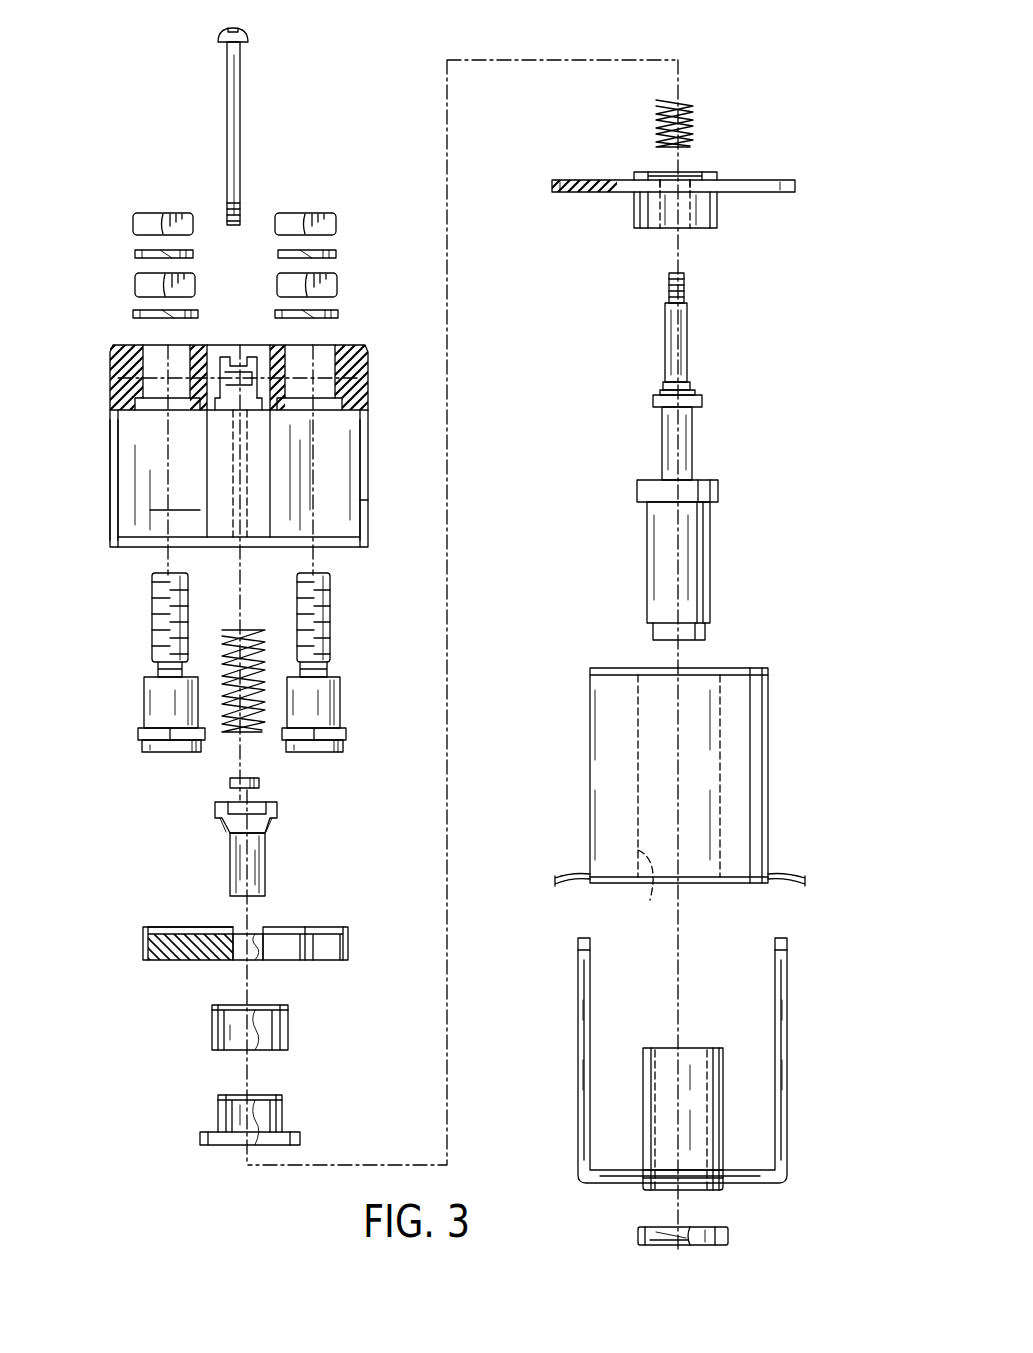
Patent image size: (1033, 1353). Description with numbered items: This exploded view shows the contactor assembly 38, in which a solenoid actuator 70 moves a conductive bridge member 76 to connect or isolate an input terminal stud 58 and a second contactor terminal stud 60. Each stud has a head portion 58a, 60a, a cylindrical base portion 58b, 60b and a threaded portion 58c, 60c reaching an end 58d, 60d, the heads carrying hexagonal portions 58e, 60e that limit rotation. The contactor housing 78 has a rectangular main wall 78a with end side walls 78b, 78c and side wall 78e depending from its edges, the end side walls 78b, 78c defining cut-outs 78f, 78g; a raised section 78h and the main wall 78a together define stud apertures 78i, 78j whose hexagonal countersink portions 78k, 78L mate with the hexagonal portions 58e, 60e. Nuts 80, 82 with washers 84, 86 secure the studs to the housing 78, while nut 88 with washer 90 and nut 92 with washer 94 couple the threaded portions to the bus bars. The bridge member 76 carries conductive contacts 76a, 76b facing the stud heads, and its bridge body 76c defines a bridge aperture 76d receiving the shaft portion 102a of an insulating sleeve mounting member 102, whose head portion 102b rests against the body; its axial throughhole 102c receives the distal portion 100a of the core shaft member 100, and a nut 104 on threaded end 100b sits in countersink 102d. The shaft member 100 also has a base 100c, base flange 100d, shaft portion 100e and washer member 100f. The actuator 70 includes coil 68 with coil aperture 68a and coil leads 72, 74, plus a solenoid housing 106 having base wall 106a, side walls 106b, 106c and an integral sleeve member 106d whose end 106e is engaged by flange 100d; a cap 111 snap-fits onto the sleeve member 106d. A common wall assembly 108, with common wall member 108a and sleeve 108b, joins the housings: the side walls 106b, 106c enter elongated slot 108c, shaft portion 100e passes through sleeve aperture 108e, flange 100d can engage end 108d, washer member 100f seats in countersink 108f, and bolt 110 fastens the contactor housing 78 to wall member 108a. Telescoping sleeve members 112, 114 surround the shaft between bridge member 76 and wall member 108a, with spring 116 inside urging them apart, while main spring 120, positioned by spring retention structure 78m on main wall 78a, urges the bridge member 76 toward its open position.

The contactor assembly 38 is at (100, 100).
The bolt 110 is at (237, 112).
The nut 92 is at (148, 220).
The washer 94 is at (138, 254).
The nut 82 is at (140, 287).
The washer 86 is at (135, 314).
The nut 88 is at (330, 222).
The washer 90 is at (335, 254).
The nut 80 is at (330, 285).
The washer 84 is at (282, 313).
The contactor housing 78 is at (108, 399).
The main wall 78a is at (122, 378).
The end side wall 78b is at (363, 470).
The end side wall 78c is at (112, 448).
The side wall 78e is at (190, 522).
The cut-out 78f is at (364, 515).
The cut-out 78g is at (112, 493).
The raised section 78h is at (345, 345).
The stud aperture 78i is at (325, 365).
The stud aperture 78j is at (155, 356).
The hexagonal countersink portion 78k is at (327, 402).
The hexagonal countersink portion 78L is at (150, 405).
The spring retention structure 78m is at (233, 360).
The second contactor terminal stud 60 is at (124, 670).
The head portion 60a is at (148, 755).
The cylindrical base portion 60b is at (146, 695).
The threaded portion 60c is at (152, 595).
The end 60d is at (158, 573).
The hexagonal portion 60e is at (140, 734).
The input terminal stud 58 is at (348, 669).
The head portion 58a is at (330, 753).
The cylindrical base portion 58b is at (342, 698).
The threaded portion 58c is at (330, 636).
The end 58d is at (316, 575).
The hexagonal portion 58e is at (347, 733).
The main spring 120 is at (262, 628).
The nut 104 is at (230, 783).
The sleeve mounting member 102 is at (244, 840).
The shaft portion 102a is at (232, 850).
The head portion 102b is at (222, 813).
The axial throughhole 102c is at (253, 870).
The countersink 102d is at (262, 808).
The conductive bridge member 76 is at (231, 940).
The conductive contact 76a is at (320, 927).
The conductive contact 76b is at (165, 927).
The bridge body 76c is at (178, 950).
The bridge aperture 76d is at (260, 958).
The telescoping sleeve member 112 is at (288, 1030).
The telescoping sleeve member 114 is at (283, 1112).
The spring 116 is at (656, 116).
The common wall assembly 108 is at (682, 196).
The common wall member 108a is at (745, 180).
The sleeve 108b is at (634, 222).
The elongated slot 108c is at (578, 193).
The end 108d is at (643, 230).
The sleeve aperture 108e is at (700, 228).
The countersink 108f is at (698, 178).
The core shaft member 100 is at (697, 453).
The distal portion 100a is at (687, 340).
The threaded end 100b is at (684, 287).
The base 100c is at (710, 600).
The base flange 100d is at (718, 492).
The shaft portion 100e is at (662, 445).
The washer member 100f is at (700, 396).
The solenoid actuator 70 is at (543, 540).
The coil 68 is at (677, 799).
The coil aperture 68a is at (639, 890).
The coil lead 74 is at (567, 875).
The coil lead 72 is at (790, 873).
The solenoid housing 106 is at (677, 1088).
The base wall 106a is at (622, 1184).
The side wall 106b is at (787, 1112).
The side wall 106c is at (580, 1092).
The sleeve member 106d is at (643, 1132).
The end 106e is at (670, 1048).
The cap 111 is at (728, 1236).